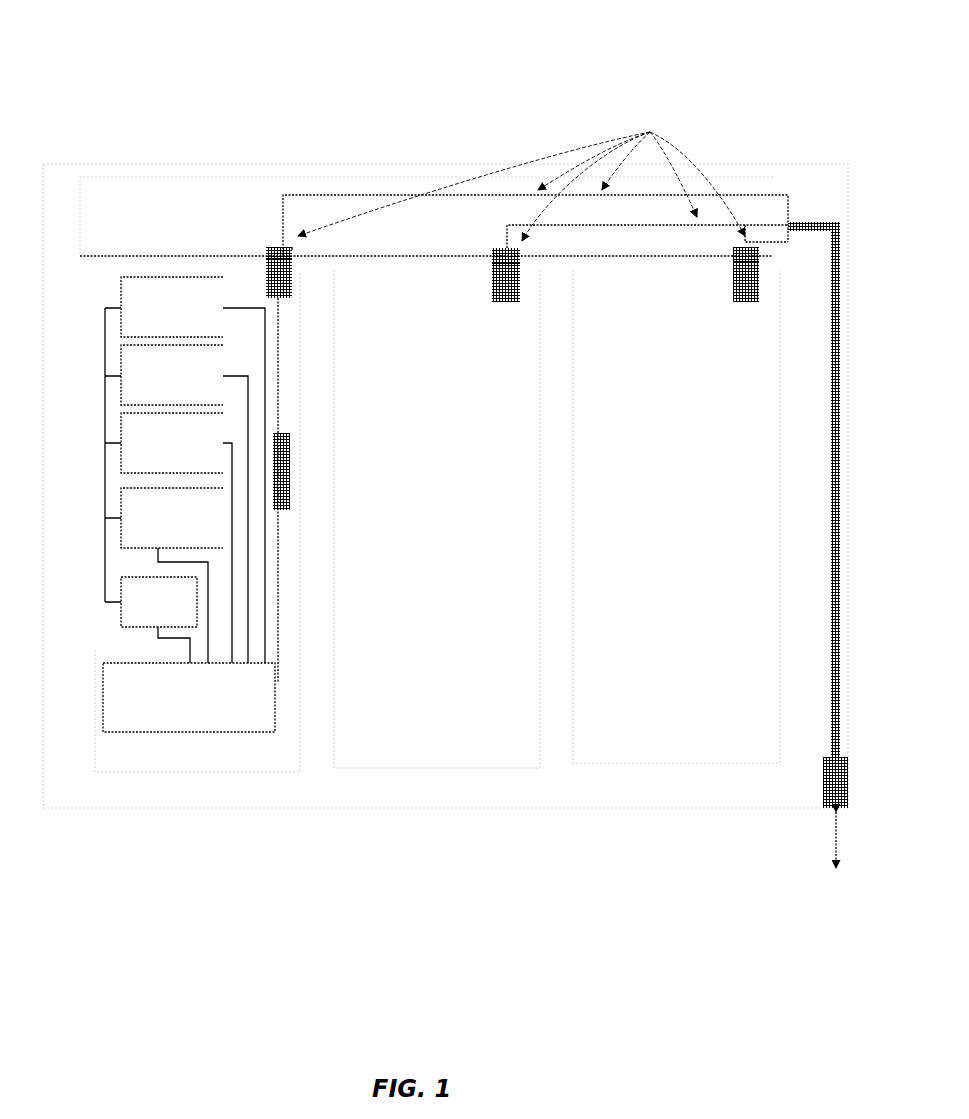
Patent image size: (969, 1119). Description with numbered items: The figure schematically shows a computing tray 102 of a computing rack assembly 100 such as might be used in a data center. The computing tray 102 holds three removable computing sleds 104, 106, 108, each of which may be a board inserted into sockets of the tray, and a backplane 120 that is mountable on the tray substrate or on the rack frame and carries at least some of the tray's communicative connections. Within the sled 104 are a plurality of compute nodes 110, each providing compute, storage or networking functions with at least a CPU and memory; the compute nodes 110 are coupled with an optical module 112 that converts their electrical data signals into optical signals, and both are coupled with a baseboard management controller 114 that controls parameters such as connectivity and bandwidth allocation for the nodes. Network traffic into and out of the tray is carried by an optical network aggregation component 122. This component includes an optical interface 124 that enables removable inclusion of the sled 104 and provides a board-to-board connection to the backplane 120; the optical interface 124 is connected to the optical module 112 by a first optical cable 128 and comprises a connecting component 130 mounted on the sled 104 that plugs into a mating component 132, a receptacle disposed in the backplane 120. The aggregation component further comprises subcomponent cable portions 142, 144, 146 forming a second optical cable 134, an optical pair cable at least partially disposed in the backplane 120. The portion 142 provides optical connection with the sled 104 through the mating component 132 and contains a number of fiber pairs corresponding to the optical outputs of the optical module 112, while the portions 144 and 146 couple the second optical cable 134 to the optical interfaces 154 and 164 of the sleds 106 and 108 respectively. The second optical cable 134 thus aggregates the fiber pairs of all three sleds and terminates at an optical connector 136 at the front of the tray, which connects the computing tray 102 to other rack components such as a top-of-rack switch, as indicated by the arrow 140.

The computing rack assembly 100 is at (525, 55).
The computing tray 102 is at (445, 486).
The sled 104 is at (197, 522).
The sled 106 is at (437, 519).
The sled 108 is at (676, 516).
The compute node 110 is at (120, 297).
The optical module 112 is at (103, 697).
The baseboard management controller 114 is at (120, 627).
The backplane 120 is at (426, 216).
The optical network aggregation component 122 is at (521, 171).
The optical interface 124 is at (280, 273).
The first optical cable 128 is at (290, 460).
The connecting component 130 is at (290, 298).
The mating component 132 is at (290, 242).
The second optical cable 134 is at (813, 220).
The optical connector 136 is at (833, 810).
The arrow 140 is at (836, 852).
The portion of the second optical cable 142 is at (360, 195).
The portion of the second optical cable 144 is at (507, 233).
The portion of the second optical cable 146 is at (790, 242).
The optical interface 154 is at (507, 275).
The optical interface 164 is at (745, 275).